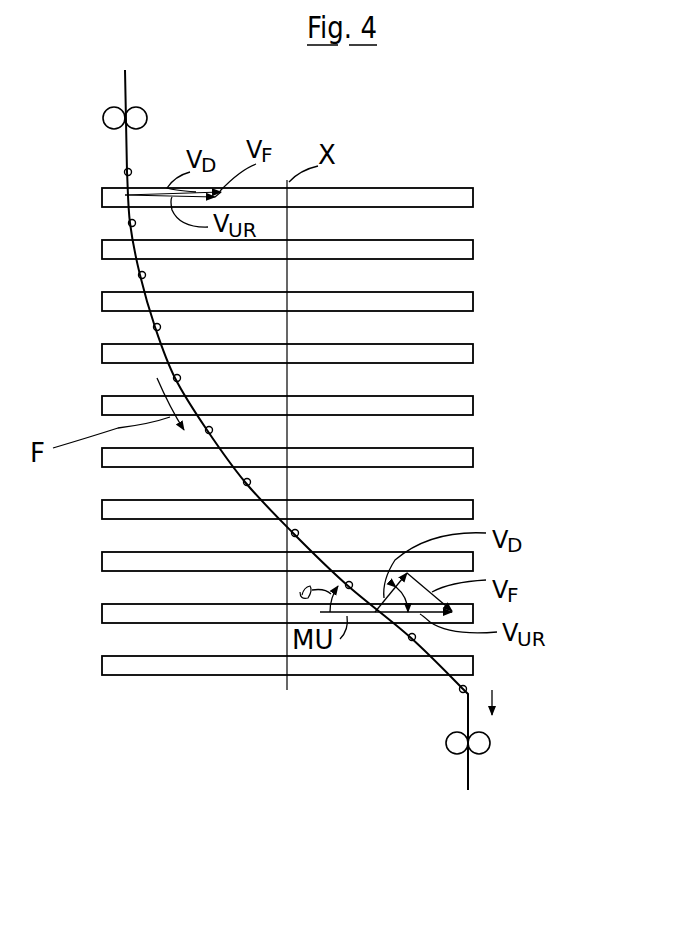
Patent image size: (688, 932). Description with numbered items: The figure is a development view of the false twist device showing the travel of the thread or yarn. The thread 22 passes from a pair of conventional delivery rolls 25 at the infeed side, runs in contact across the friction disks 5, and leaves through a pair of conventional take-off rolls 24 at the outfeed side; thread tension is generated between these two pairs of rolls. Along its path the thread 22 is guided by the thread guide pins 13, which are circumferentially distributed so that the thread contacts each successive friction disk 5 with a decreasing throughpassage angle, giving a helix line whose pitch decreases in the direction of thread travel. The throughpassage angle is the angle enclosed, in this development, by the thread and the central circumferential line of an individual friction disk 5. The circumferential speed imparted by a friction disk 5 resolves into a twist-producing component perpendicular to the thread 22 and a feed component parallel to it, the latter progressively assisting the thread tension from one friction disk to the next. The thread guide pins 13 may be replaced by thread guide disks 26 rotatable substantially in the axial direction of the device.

The delivery rolls 25 is at (146, 99).
The thread 22 is at (125, 158).
The thread guide pin 13 is at (296, 431).
The thread guide disks 26 is at (146, 275).
The friction disks 5 is at (314, 431).
The take-off rolls 24 is at (438, 754).